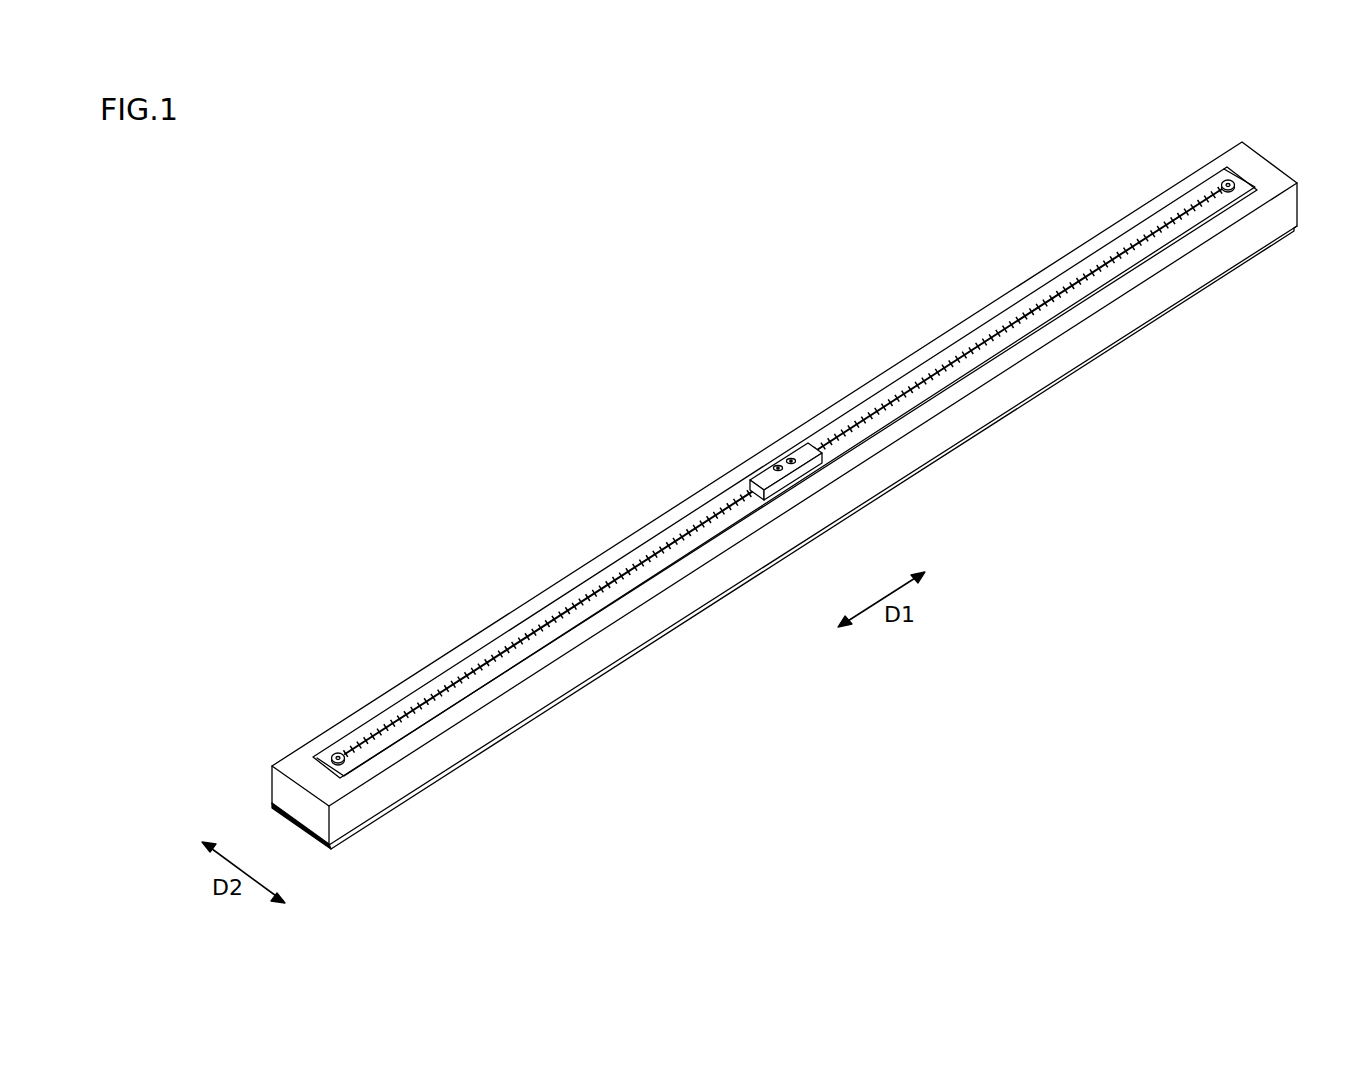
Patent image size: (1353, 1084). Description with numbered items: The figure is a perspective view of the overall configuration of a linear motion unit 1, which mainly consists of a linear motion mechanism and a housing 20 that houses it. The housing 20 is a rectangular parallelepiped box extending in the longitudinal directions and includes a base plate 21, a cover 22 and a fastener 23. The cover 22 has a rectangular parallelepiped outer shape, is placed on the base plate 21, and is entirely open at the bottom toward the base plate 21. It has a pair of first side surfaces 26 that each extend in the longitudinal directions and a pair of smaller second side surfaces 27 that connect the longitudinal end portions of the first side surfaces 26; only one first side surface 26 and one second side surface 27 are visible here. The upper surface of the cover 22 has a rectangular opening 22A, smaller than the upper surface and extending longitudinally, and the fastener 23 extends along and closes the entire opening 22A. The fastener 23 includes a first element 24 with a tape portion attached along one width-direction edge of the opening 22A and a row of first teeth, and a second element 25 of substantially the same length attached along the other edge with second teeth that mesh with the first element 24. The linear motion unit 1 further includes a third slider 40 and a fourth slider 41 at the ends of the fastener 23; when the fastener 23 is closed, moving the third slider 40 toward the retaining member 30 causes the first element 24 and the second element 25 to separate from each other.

The linear motion unit 1 is at (1063, 173).
The housing 20 is at (555, 803).
The base plate 21 is at (495, 748).
The cover 22 is at (522, 713).
The opening 22A is at (918, 403).
The fastener 23 is at (723, 692).
The first element 24 is at (633, 585).
The second element 25 is at (673, 540).
The first side surfaces 26 is at (815, 520).
The second side surfaces 27 is at (300, 815).
The retaining member 30 is at (800, 450).
The third slider 40 is at (336, 752).
The fourth slider 41 is at (1224, 181).